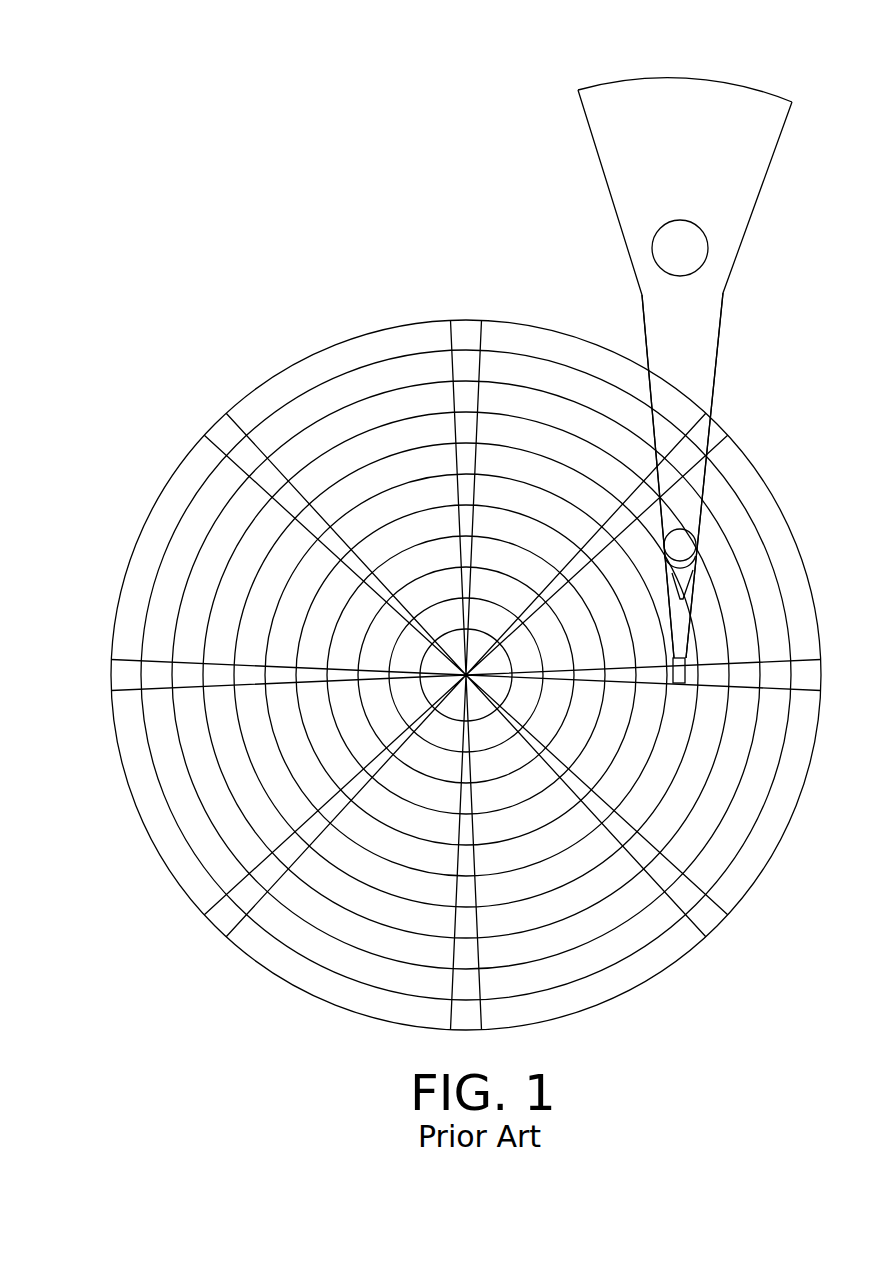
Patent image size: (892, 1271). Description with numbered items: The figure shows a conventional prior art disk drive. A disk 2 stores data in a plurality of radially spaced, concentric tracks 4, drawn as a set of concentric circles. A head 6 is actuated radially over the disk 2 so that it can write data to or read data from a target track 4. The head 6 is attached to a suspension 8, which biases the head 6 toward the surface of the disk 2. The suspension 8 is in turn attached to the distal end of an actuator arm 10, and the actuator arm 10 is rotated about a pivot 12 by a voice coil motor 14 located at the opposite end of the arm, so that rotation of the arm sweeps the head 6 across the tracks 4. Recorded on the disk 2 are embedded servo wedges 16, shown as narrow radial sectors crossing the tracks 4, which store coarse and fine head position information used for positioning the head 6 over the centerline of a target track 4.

The disk 2 is at (207, 325).
The tracks 4 is at (347, 390).
The head 6 is at (683, 686).
The suspension 8 is at (678, 638).
The actuator arm 10 is at (713, 336).
The pivot 12 is at (668, 259).
The voice coil motor 14 is at (688, 76).
The embedded servo wedges 16 is at (470, 332).